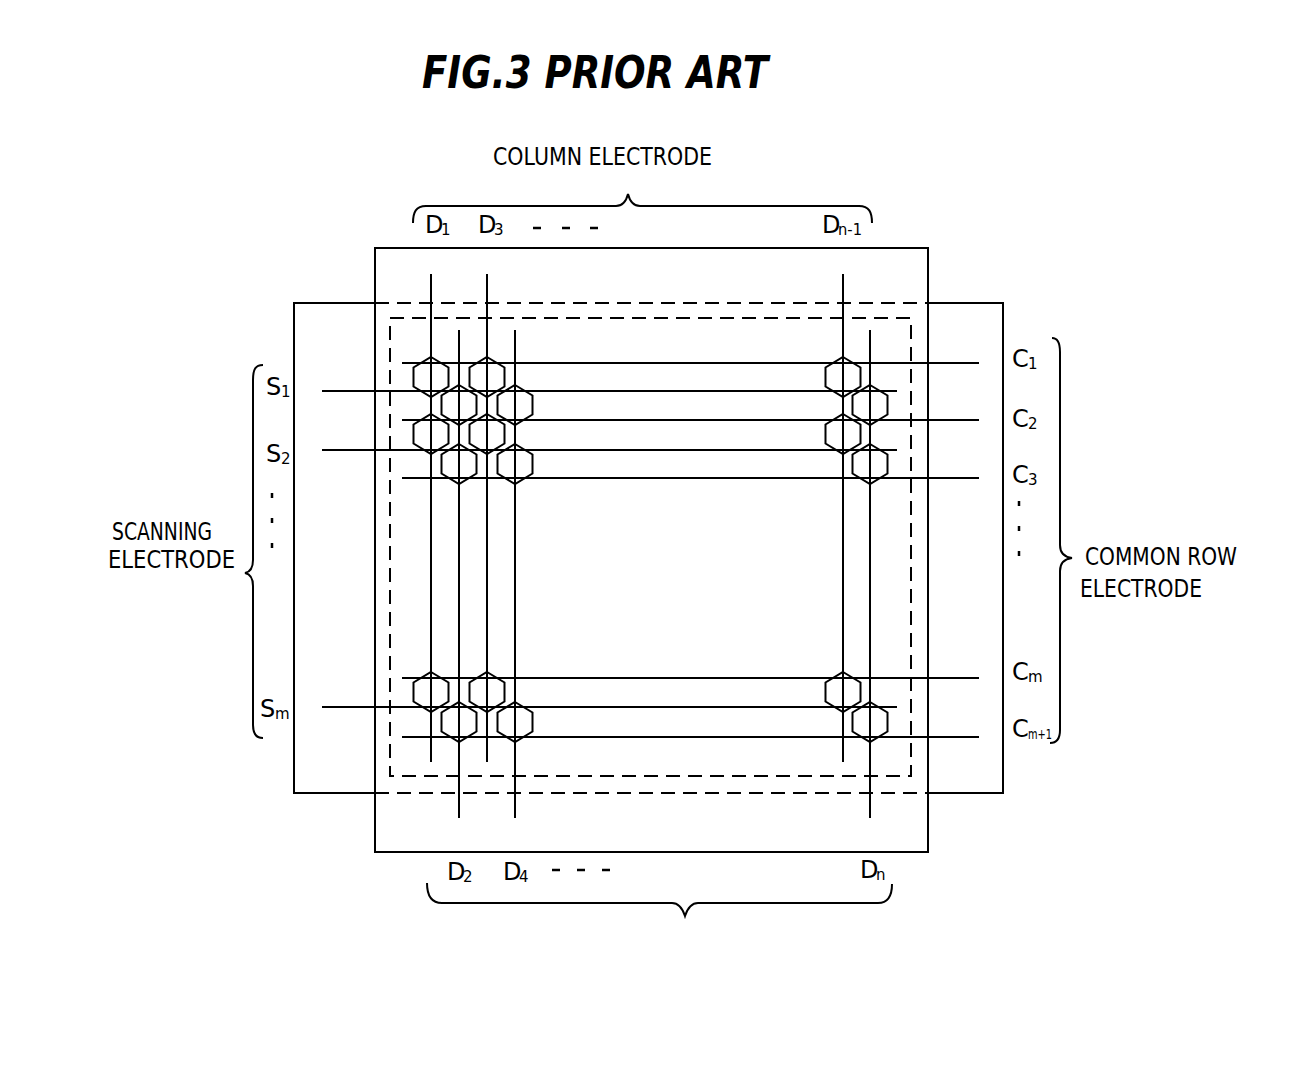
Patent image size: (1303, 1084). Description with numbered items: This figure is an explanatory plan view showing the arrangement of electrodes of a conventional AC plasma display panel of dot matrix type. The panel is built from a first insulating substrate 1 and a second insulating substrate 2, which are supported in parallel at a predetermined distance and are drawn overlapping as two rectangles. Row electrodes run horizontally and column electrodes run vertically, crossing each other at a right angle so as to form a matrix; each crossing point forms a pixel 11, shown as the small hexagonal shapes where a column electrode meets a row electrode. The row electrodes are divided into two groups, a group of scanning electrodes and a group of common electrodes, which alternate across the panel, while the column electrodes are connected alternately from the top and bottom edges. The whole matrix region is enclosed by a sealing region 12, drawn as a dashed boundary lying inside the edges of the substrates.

The first insulating substrate 1 is at (955, 320).
The second insulating substrate 2 is at (884, 256).
The pixel 11 is at (523, 723).
The sealing region 12 is at (917, 767).